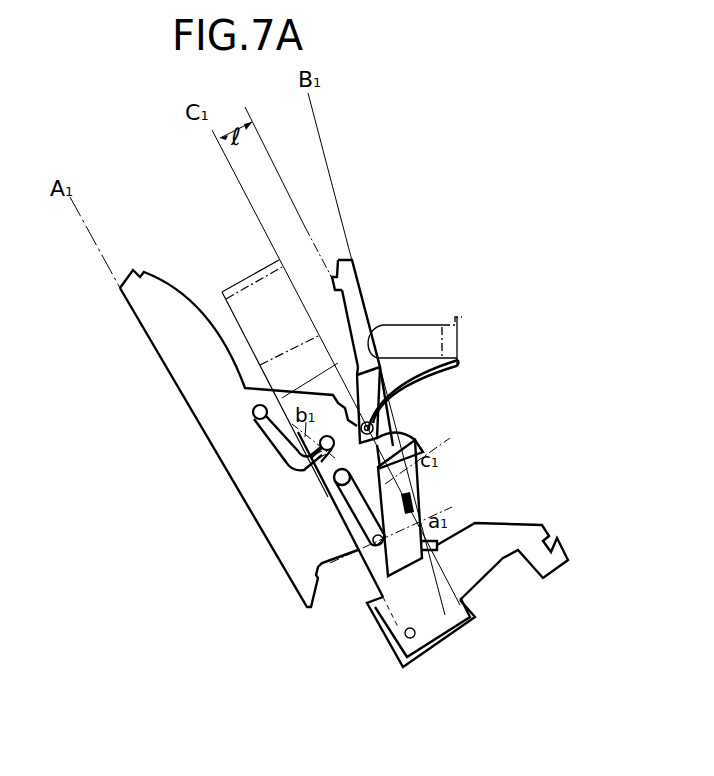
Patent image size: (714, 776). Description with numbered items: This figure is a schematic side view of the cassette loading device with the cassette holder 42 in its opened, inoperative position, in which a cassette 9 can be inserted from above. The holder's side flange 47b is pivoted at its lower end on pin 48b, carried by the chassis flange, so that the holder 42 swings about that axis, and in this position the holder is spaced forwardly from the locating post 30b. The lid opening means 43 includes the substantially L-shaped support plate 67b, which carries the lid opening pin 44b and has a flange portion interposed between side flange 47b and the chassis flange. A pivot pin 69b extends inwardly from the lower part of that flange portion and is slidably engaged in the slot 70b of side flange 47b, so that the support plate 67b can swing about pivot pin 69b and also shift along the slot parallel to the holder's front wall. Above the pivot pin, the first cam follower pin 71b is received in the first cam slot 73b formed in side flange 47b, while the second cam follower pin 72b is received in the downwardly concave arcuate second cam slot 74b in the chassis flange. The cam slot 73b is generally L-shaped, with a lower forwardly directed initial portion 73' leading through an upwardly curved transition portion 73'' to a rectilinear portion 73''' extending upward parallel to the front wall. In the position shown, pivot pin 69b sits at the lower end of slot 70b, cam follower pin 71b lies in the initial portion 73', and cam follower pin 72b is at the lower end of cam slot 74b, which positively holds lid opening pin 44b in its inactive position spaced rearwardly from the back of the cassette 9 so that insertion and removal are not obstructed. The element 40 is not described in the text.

The cassette 9 is at (228, 274).
The cassette holder 42 is at (235, 438).
The side flange 47b is at (165, 343).
The lid opening means 43 is at (330, 252).
The lid opening pin 44b is at (338, 265).
The support plate 67b is at (384, 337).
The second cam follower pin 72b is at (378, 425).
The second cam slot 74b is at (420, 372).
The locating post 30b is at (432, 315).
The lever 40 is at (425, 448).
The pivot pin 69b is at (362, 555).
The pin 48b is at (415, 637).
The first cam follower pin 71b is at (302, 468).
The initial portion of first cam slot 73' is at (341, 452).
The transition portion of first cam slot 73'' is at (320, 492).
The rectilinear portion of first cam slot 73''' is at (237, 463).
The first cam slot 73b is at (267, 443).
The slot 70b is at (362, 509).